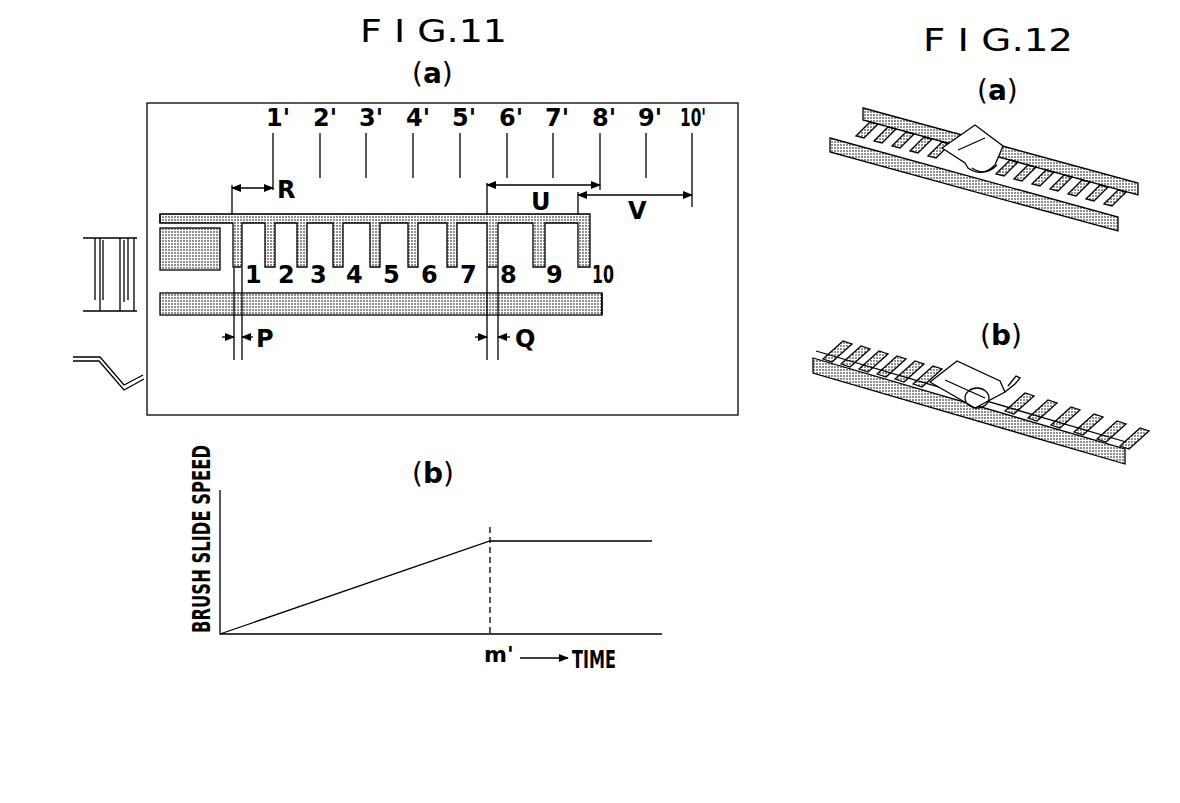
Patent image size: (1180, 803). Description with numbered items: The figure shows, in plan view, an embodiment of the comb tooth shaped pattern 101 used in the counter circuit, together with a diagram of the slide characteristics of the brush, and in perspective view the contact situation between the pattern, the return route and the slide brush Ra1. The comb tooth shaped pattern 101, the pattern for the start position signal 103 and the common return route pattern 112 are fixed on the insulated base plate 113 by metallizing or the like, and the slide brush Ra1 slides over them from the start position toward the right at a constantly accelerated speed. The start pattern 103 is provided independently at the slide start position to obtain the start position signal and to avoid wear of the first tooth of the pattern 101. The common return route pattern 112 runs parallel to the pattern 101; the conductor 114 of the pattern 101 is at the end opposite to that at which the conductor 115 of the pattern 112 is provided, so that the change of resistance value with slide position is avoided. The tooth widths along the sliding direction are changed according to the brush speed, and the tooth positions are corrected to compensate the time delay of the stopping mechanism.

In FIG. 11, the comb tooth shaped pattern 101 is at (187, 214).
In FIG. 12, the comb tooth shaped pattern 101 is at (1058, 158).
In FIG. 11, the pattern for the start position signal 103 is at (160, 235).
In FIG. 11, the common return route pattern 112 is at (183, 316).
In FIG. 12, the common return route pattern 112 is at (1010, 195).
In FIG. 11, the insulated base plate 113 is at (207, 103).
In FIG. 11, the conductor of the pattern 114 is at (159, 215).
In FIG. 11, the conductor of the pattern 115 is at (603, 303).
In FIG. 11, the slide brush Ra1 is at (98, 313).
In FIG. 12, the slide brush Ra1 is at (978, 137).